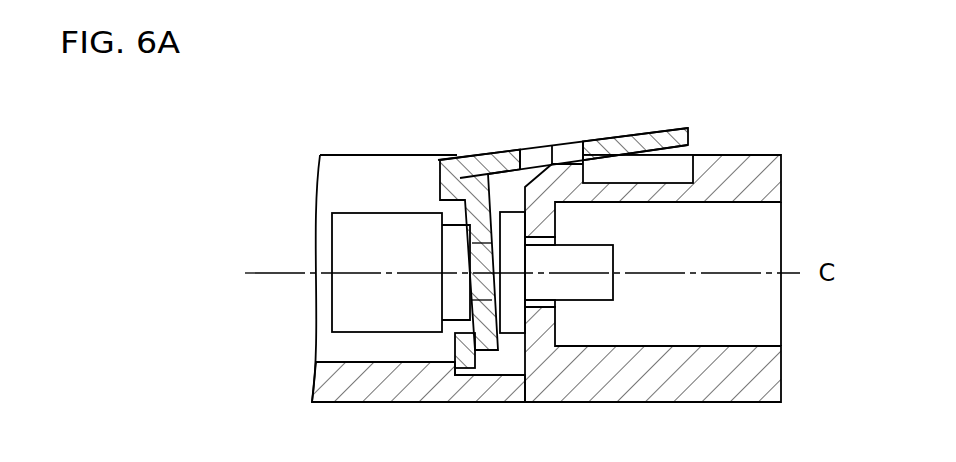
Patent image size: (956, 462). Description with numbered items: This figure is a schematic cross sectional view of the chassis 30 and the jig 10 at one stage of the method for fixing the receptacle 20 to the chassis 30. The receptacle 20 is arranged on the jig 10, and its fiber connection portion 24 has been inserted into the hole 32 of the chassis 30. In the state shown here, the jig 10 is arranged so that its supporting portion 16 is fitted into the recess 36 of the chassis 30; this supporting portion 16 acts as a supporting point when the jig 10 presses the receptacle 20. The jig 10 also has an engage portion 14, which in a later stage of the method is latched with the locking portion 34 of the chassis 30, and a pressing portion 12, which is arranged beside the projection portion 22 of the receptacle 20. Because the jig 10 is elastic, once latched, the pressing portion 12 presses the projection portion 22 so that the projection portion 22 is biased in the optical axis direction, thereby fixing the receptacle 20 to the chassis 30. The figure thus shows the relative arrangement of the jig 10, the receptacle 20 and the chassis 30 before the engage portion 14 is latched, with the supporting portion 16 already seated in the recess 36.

The jig 10 is at (645, 133).
The pressing portion 12 is at (478, 247).
The engage portion 14 is at (568, 148).
The supporting portion 16 is at (453, 367).
The receptacle 20 is at (358, 253).
The projection portion 22 is at (510, 225).
The fiber connection portion 24 is at (600, 257).
The chassis 30 is at (770, 176).
The hole 32 is at (555, 243).
The locking portion 34 is at (553, 170).
The recess 36 is at (465, 372).